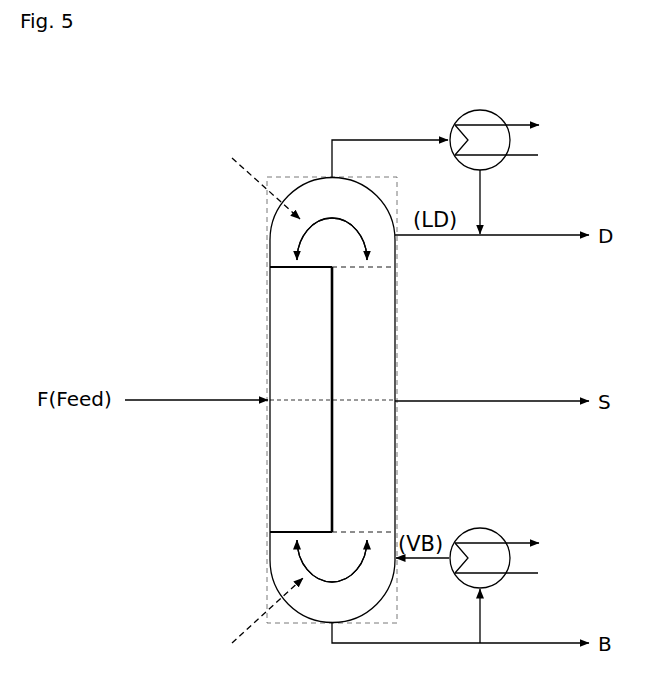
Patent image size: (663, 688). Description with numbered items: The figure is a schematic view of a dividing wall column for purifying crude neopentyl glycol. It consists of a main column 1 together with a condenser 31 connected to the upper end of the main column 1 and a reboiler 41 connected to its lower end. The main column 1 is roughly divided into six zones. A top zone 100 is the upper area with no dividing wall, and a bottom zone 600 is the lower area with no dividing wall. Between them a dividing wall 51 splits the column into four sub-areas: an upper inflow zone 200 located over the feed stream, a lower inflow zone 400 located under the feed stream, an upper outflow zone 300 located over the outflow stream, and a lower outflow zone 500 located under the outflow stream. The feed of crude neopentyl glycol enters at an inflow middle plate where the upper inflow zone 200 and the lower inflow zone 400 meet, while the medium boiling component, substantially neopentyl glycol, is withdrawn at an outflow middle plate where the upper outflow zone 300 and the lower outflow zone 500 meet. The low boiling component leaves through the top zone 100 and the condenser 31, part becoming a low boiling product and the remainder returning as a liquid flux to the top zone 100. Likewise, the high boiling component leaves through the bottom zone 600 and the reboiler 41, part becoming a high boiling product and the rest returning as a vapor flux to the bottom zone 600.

The main column 1 is at (252, 298).
The condenser 31 is at (479, 110).
The reboiler 41 is at (479, 528).
The dividing wall 51 is at (334, 310).
The top zone 100 is at (266, 195).
The upper inflow zone 200 is at (296, 320).
The upper outflow zone 300 is at (367, 320).
The lower inflow zone 400 is at (296, 480).
The lower outflow zone 500 is at (367, 480).
The bottom zone 600 is at (262, 601).